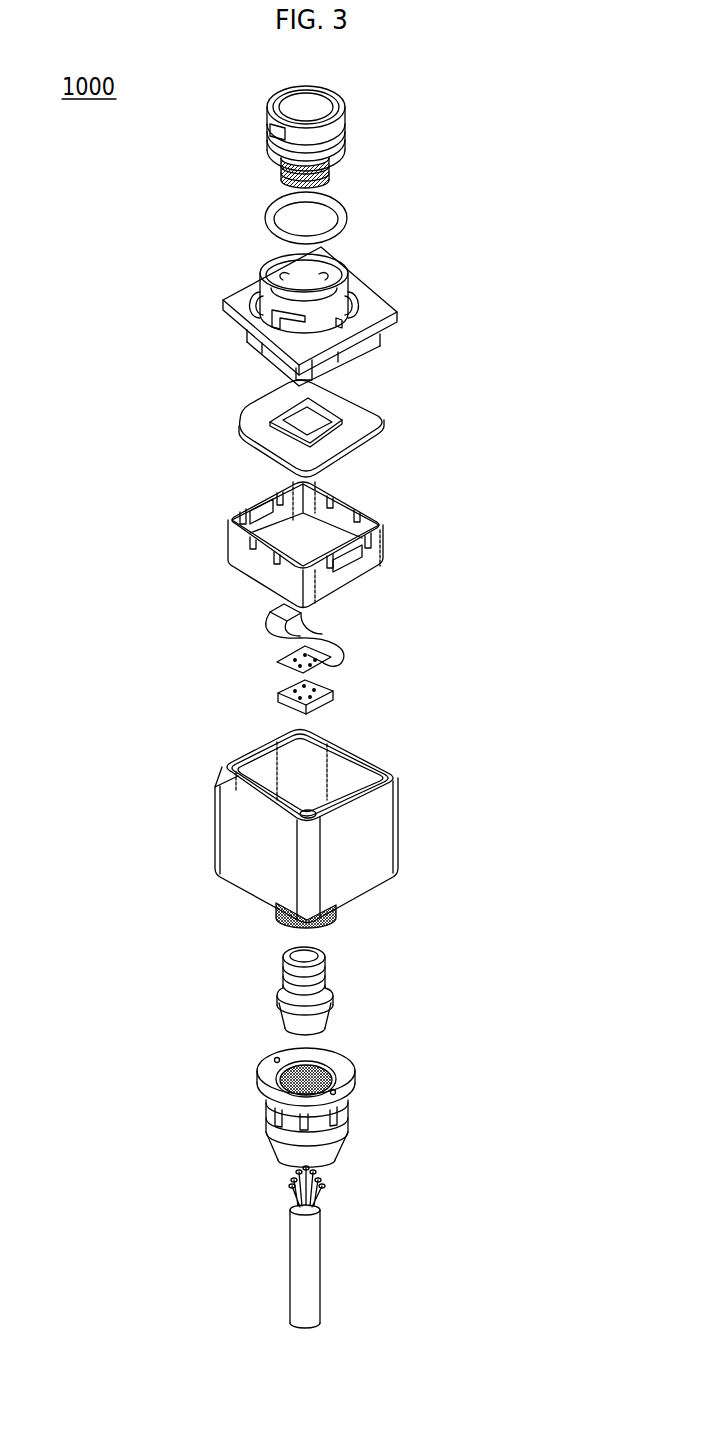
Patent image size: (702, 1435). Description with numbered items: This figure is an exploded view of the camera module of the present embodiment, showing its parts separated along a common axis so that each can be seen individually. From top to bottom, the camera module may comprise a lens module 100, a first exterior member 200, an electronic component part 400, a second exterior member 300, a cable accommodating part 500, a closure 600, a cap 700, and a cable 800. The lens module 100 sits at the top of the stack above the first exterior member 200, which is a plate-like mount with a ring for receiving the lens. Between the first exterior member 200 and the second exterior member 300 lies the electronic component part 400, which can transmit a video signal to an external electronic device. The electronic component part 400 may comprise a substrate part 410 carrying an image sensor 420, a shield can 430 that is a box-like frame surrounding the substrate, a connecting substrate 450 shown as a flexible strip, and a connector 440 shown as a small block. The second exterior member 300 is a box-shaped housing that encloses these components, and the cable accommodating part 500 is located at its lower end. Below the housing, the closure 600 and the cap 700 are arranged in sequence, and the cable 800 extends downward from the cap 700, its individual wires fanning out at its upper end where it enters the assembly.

The lens module 100 is at (355, 122).
The first exterior member 200 is at (403, 312).
The second exterior member 300 is at (403, 815).
The electronic component part 400 is at (395, 538).
The substrate part 410 is at (258, 428).
The image sensor 420 is at (296, 413).
The shield can 430 is at (228, 538).
The connector 440 is at (278, 691).
The connecting substrate 450 is at (263, 617).
The cable accommodating part 500 is at (282, 920).
The closure 600 is at (347, 983).
The cap 700 is at (367, 1087).
The cable 800 is at (348, 1232).